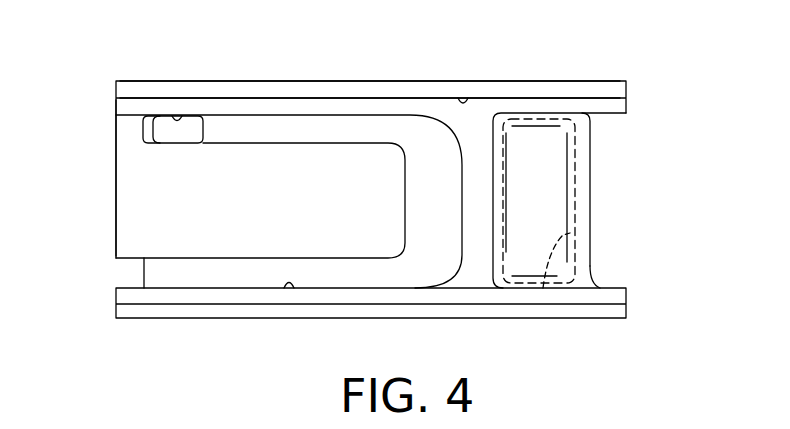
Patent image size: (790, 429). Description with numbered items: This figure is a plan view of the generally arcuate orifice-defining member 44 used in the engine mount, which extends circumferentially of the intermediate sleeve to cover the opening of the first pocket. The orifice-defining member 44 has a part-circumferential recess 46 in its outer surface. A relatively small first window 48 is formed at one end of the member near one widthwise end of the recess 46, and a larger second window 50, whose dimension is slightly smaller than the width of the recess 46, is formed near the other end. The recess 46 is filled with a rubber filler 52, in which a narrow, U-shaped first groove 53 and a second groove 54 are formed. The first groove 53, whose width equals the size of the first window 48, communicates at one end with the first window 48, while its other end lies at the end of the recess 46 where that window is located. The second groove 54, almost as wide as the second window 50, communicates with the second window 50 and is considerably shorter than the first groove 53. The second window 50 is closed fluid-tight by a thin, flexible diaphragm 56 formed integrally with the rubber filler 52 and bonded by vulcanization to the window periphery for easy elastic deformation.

The orifice-defining member 44 is at (519, 88).
The recess 46 is at (463, 104).
The first window 48 is at (177, 120).
The second window 50 is at (543, 288).
The rubber filler 52 is at (128, 190).
The first groove 53 is at (290, 283).
The second groove 54 is at (578, 288).
The flexible diaphragm 56 is at (553, 180).